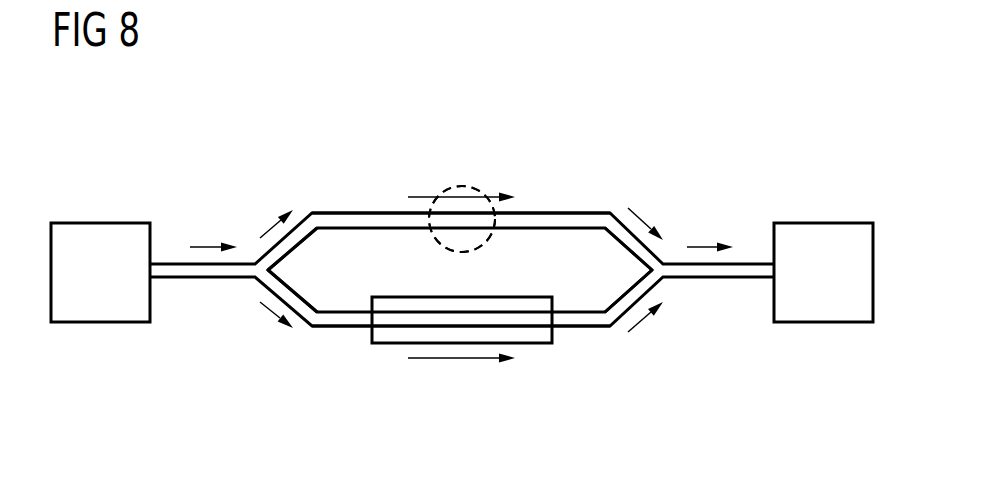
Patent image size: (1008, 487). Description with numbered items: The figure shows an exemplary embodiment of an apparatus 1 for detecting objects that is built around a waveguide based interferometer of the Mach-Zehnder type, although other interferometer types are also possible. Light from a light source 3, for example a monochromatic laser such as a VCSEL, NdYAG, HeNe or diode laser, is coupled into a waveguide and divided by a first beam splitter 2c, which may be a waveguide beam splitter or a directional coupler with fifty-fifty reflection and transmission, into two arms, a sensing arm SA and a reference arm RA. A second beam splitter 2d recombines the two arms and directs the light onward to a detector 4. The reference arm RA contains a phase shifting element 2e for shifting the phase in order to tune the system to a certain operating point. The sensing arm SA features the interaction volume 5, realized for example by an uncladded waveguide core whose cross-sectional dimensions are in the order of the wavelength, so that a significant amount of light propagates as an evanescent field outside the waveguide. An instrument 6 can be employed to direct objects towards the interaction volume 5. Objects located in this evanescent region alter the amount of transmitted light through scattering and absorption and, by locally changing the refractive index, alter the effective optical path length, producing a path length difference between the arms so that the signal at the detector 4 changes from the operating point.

The apparatus 1 is at (133, 127).
The light source 3 is at (101, 235).
The detector 4 is at (825, 235).
The beam splitter 2c is at (276, 270).
The beam splitter 2d is at (646, 270).
The phase shifting element 2e is at (538, 338).
The interaction volume 5 is at (470, 190).
The instrument 6 is at (455, 188).
The sensing arm SA is at (340, 200).
The reference arm RA is at (333, 345).